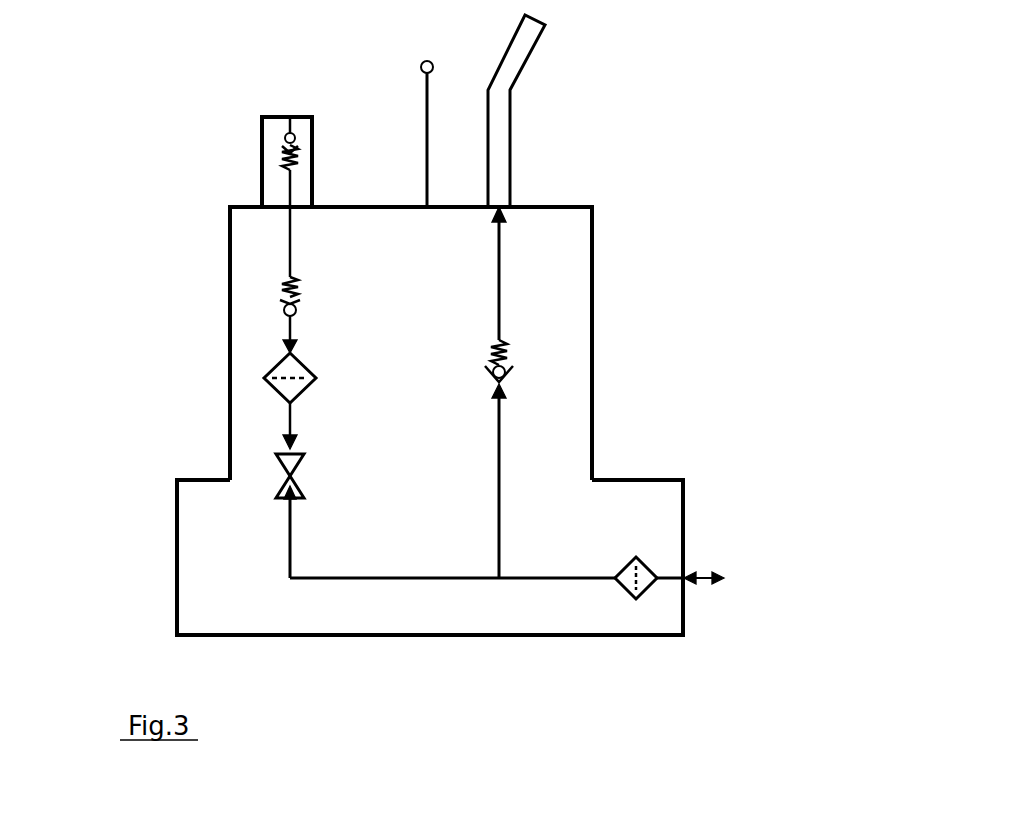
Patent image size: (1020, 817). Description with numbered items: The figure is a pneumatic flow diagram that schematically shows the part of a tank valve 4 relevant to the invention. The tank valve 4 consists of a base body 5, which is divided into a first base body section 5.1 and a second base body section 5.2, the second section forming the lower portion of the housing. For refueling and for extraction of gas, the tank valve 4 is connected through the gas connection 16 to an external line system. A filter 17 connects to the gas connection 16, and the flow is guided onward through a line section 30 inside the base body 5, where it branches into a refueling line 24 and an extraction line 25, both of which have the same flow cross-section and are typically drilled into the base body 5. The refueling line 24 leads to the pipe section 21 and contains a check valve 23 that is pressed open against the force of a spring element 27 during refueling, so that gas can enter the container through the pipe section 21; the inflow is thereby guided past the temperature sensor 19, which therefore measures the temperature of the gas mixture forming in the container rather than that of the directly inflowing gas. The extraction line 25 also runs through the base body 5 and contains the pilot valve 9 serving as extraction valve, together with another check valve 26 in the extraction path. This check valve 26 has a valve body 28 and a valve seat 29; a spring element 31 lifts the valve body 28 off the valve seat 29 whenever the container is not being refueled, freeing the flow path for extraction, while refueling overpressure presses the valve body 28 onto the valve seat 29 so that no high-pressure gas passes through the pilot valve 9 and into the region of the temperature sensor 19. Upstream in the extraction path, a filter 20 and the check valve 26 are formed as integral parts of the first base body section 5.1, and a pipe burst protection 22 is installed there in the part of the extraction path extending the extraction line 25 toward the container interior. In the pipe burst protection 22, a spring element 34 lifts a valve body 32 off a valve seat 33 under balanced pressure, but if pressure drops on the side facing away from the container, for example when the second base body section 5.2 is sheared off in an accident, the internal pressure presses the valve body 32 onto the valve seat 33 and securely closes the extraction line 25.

The tank valve 4 is at (717, 399).
The base body 5 is at (366, 337).
The first base body section 5.1 is at (413, 228).
The second base body section 5.2 is at (195, 527).
The pilot valve 9 is at (288, 503).
The gas connection 16 is at (672, 582).
The filter 17 is at (625, 590).
The temperature sensor 19 is at (433, 63).
The filter 20 is at (276, 396).
The pipe section 21 is at (518, 53).
The pipe burst protection 22 is at (256, 190).
The check valve 23 is at (562, 402).
The refueling line 24 is at (505, 522).
The extraction line 25 is at (289, 426).
The check valve 26 is at (272, 286).
The spring element 27 is at (515, 365).
The valve body 28 is at (283, 313).
The valve seat 29 is at (283, 310).
The line section 30 is at (562, 580).
The spring element 31 is at (221, 291).
The valve body 32 is at (295, 137).
The valve seat 33 is at (300, 150).
The spring element 34 is at (285, 172).